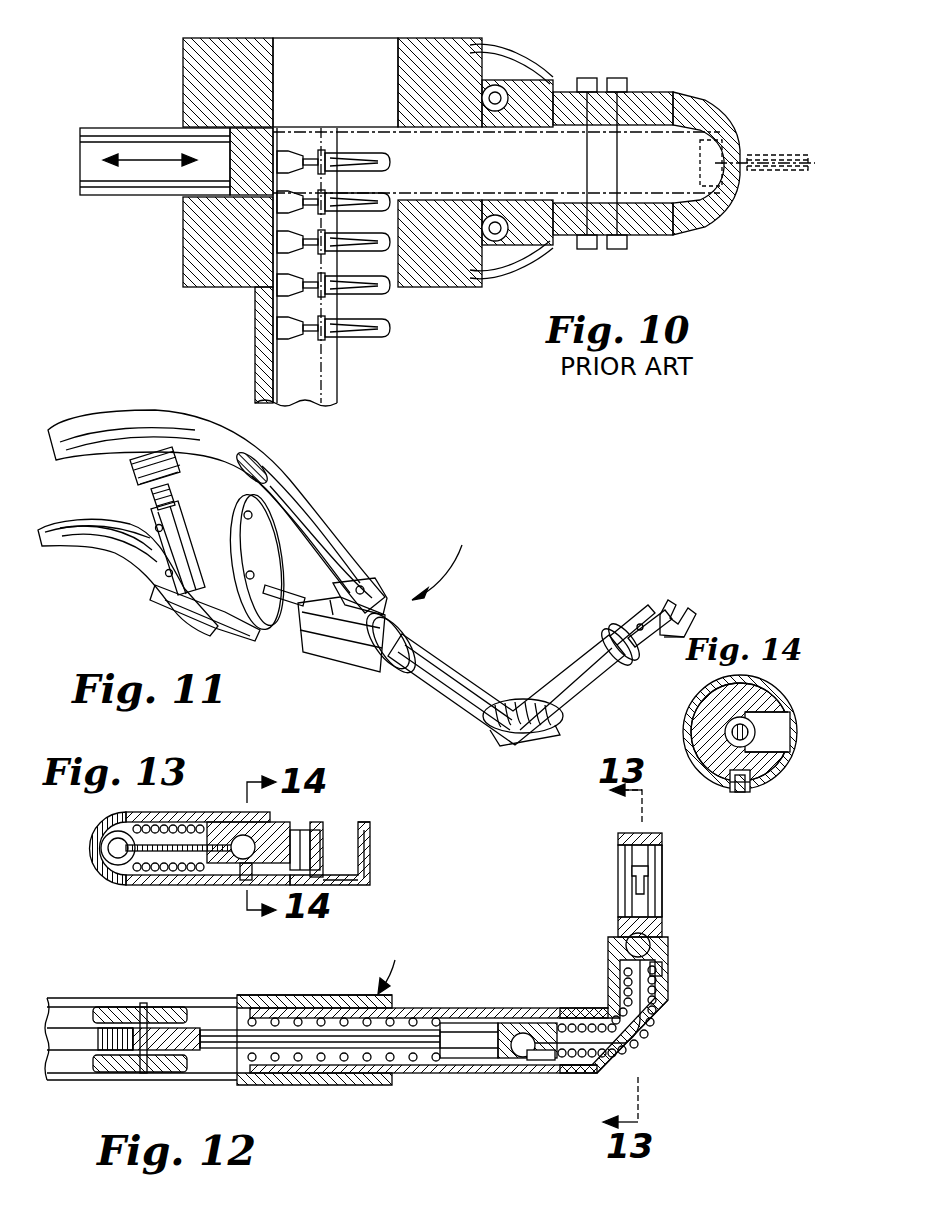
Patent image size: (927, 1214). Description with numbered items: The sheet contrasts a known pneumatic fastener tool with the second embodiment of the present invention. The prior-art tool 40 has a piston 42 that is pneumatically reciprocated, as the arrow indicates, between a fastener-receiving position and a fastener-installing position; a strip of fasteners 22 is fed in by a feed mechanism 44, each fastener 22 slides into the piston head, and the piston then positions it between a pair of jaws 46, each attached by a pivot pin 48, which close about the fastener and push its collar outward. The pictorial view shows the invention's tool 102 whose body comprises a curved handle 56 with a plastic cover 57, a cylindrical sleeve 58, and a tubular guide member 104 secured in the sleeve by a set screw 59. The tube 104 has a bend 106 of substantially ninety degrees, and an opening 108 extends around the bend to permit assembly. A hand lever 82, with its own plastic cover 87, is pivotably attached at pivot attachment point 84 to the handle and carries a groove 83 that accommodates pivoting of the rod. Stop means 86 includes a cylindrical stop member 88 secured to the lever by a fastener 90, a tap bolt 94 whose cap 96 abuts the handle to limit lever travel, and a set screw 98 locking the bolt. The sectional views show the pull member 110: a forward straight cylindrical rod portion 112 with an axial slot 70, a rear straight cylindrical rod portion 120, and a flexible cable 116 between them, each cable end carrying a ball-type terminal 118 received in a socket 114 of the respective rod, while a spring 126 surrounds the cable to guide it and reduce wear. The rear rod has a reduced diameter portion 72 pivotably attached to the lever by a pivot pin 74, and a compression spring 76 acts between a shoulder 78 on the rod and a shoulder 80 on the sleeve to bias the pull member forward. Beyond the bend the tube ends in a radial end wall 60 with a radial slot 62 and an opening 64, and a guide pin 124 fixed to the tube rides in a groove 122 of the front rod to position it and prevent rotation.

In FIG. 10, the fastener 22 is at (382, 160).
In FIG. 10, the tool 40 is at (558, 60).
In FIG. 10, the piston 42 is at (136, 188).
In FIG. 10, the feed mechanism 44 is at (318, 398).
In FIG. 10, the jaw 46 is at (720, 114).
In FIG. 10, the pivot pin 48 is at (495, 96).
In FIG. 11, the handle portion 56 is at (130, 428).
In FIG. 11, the plastic cover 57 is at (216, 484).
In FIG. 11, the cylindrical sleeve 58 is at (360, 647).
In FIG. 11, the set screw 59 is at (367, 583).
In FIG. 11, the radial end wall 60 is at (690, 614).
In FIG. 13, the radial end wall 60 is at (372, 846).
In FIG. 12, the radial end wall 60 is at (664, 850).
In FIG. 11, the radial slot 62 is at (672, 603).
In FIG. 13, the radial slot 62 is at (372, 832).
In FIG. 12, the radial slot 62 is at (644, 833).
In FIG. 11, the opening 64 is at (645, 613).
In FIG. 13, the opening 64 is at (372, 876).
In FIG. 12, the opening 64 is at (664, 875).
In FIG. 11, the axial slot 70 is at (638, 626).
In FIG. 12, the axial slot 70 is at (632, 868).
In FIG. 11, the reduced diameter portion 72 is at (307, 580).
In FIG. 12, the reduced diameter portion 72 is at (215, 1030).
In FIG. 11, the pivot pin 74 is at (250, 579).
In FIG. 12, the pivot pin 74 is at (144, 1003).
In FIG. 12, the compression spring 76 is at (290, 1086).
In FIG. 12, the shoulder 78 is at (400, 1072).
In FIG. 12, the shoulder 80 is at (255, 1000).
In FIG. 11, the hand lever 82 is at (130, 582).
In FIG. 12, the hand lever 82 is at (82, 1082).
In FIG. 11, the groove 83 is at (287, 562).
In FIG. 12, the groove 83 is at (195, 1052).
In FIG. 11, the pivot attachment point 84 is at (197, 548).
In FIG. 11, the stop means 86 is at (293, 590).
In FIG. 11, the plastic cover 87 is at (102, 552).
In FIG. 11, the cylindrical stop member 88 is at (150, 510).
In FIG. 11, the fastener 90 is at (163, 603).
In FIG. 11, the tap bolt 94 is at (182, 483).
In FIG. 11, the cap 96 is at (132, 462).
In FIG. 11, the set screw 98 is at (190, 522).
In FIG. 11, the tool 102 is at (450, 554).
In FIG. 12, the tool 102 is at (394, 963).
In FIG. 11, the tubular guide member 104 is at (463, 718).
In FIG. 14, the tubular guide member 104 is at (796, 704).
In FIG. 13, the tubular guide member 104 is at (177, 885).
In FIG. 12, the tubular guide member 104 is at (420, 1008).
In FIG. 11, the bend 106 is at (529, 739).
In FIG. 12, the bend 106 is at (609, 1008).
In FIG. 11, the opening 108 is at (558, 732).
In FIG. 13, the opening 108 is at (96, 874).
In FIG. 12, the opening 108 is at (650, 1045).
In FIG. 11, the pull member 110 is at (603, 638).
In FIG. 12, the pull member 110 is at (668, 949).
In FIG. 11, the forward straight cylindrical rod portion 112 is at (632, 665).
In FIG. 14, the forward straight cylindrical rod portion 112 is at (710, 743).
In FIG. 13, the forward straight cylindrical rod portion 112 is at (283, 835).
In FIG. 12, the forward straight cylindrical rod portion 112 is at (664, 925).
In FIG. 14, the socket 114 is at (772, 773).
In FIG. 13, the socket 114 is at (240, 880).
In FIG. 12, the socket 114 is at (540, 1062).
In FIG. 13, the flexible cable 116 is at (195, 888).
In FIG. 12, the flexible cable 116 is at (605, 1073).
In FIG. 14, the ball-type terminal 118 is at (730, 725).
In FIG. 13, the ball-type terminal 118 is at (241, 835).
In FIG. 12, the ball-type terminal 118 is at (518, 1059).
In FIG. 13, the rear straight cylindrical rod portion 120 is at (107, 827).
In FIG. 12, the rear straight cylindrical rod portion 120 is at (467, 1023).
In FIG. 14, the groove 122 is at (735, 785).
In FIG. 13, the groove 122 is at (315, 850).
In FIG. 14, the guide pin 124 is at (747, 792).
In FIG. 13, the guide pin 124 is at (320, 880).
In FIG. 11, the spring 126 is at (516, 734).
In FIG. 13, the spring 126 is at (136, 865).
In FIG. 12, the spring 126 is at (572, 1038).